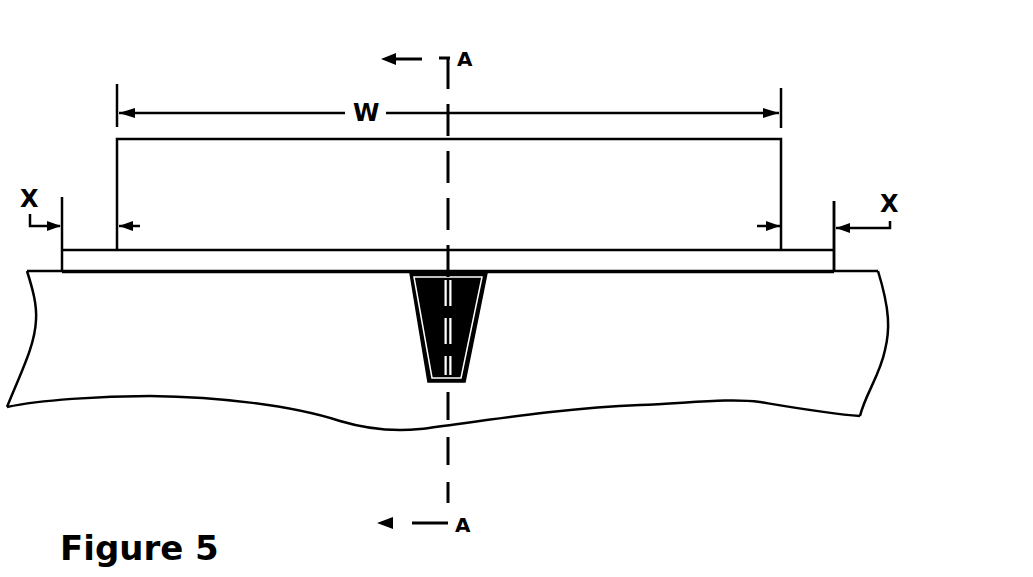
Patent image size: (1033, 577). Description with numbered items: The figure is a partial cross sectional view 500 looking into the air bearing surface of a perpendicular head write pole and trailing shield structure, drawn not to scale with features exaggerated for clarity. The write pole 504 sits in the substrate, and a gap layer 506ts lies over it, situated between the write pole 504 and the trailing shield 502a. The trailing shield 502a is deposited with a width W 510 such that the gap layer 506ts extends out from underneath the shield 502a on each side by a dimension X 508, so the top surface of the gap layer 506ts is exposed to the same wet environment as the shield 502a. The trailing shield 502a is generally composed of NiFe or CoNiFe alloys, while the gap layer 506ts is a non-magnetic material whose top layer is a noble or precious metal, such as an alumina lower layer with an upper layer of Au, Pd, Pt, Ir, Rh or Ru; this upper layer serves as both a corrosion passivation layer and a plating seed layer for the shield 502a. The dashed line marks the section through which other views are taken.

The partial cross sectional view 500 is at (547, 65).
The trailing shield 502a is at (319, 207).
The write pole 504 is at (481, 303).
The gap layer 506ts is at (545, 262).
The dimension X 508 is at (890, 187).
The width W 510 is at (368, 90).